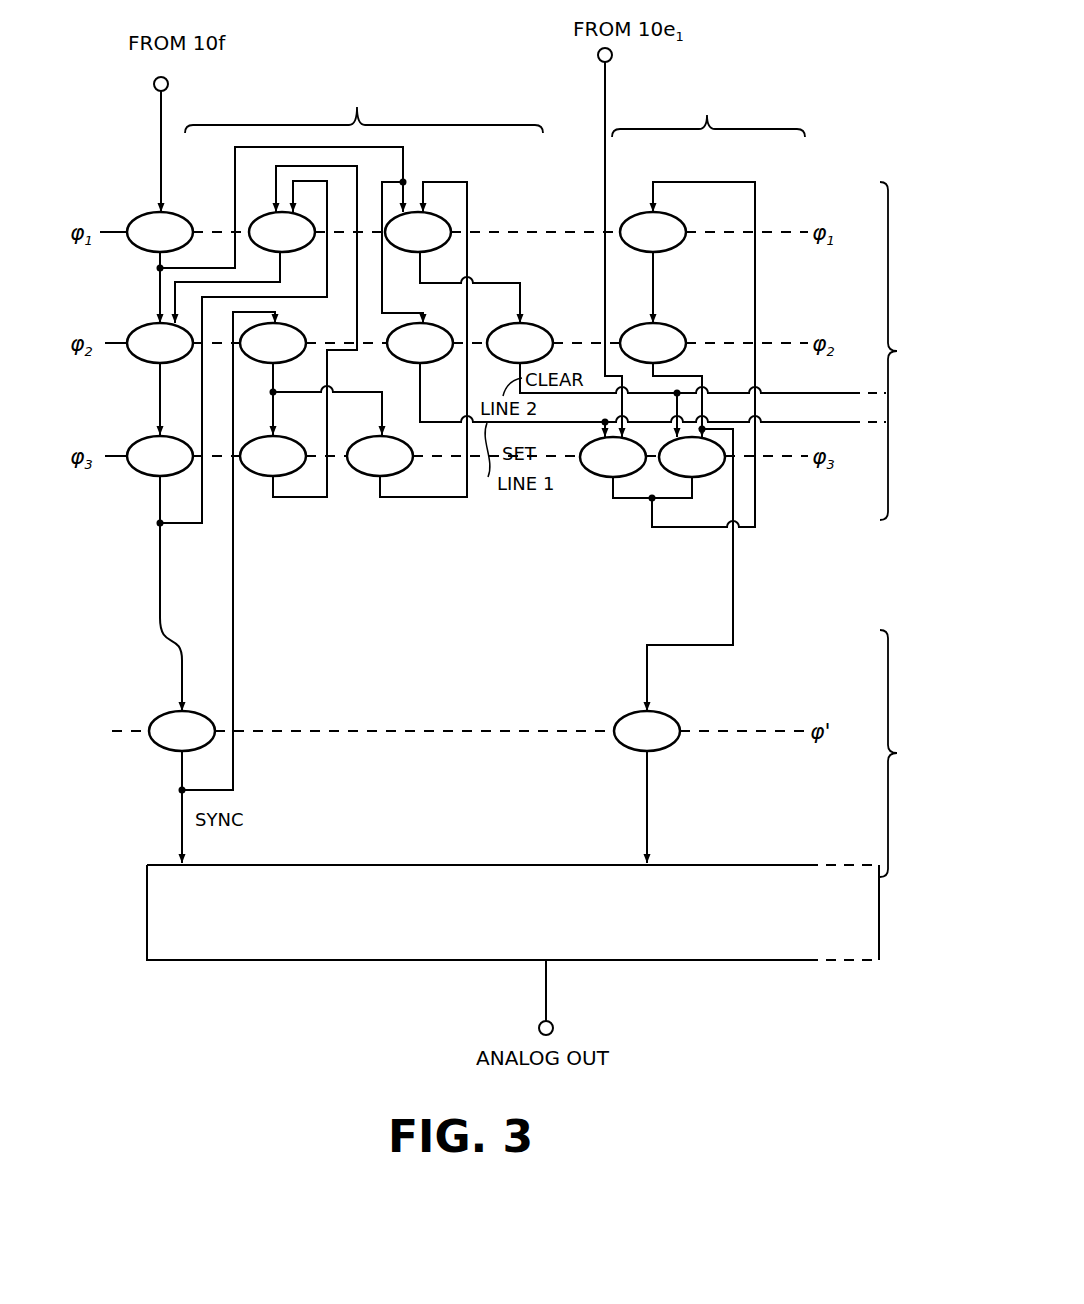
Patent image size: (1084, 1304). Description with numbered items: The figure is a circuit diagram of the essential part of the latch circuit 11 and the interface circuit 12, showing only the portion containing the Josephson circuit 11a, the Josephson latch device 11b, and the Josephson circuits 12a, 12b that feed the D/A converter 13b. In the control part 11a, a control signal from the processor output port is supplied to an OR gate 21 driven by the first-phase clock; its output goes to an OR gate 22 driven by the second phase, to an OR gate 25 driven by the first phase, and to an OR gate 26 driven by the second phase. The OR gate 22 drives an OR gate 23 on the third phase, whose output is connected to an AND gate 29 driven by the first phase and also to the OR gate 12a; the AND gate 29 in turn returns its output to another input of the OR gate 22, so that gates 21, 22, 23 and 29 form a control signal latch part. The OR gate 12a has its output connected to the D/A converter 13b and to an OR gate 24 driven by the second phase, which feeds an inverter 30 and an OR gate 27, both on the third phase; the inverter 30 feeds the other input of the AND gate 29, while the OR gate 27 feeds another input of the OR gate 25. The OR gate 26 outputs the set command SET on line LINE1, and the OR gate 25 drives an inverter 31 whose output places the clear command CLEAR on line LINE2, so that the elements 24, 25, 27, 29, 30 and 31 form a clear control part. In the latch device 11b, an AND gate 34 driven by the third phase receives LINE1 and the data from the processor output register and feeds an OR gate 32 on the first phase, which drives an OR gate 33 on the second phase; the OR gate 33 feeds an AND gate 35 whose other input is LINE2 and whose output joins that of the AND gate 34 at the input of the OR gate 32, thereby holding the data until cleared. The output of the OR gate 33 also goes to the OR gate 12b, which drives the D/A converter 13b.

The Josephson OR gate 21 is at (144, 212).
The Josephson OR gate 22 is at (144, 325).
The Josephson OR gate 23 is at (144, 437).
The Josephson OR gate 24 is at (262, 364).
The Josephson OR gate 25 is at (447, 219).
The Josephson OR gate 26 is at (402, 359).
The Josephson OR gate 27 is at (372, 477).
The Josephson AND gate 29 is at (303, 252).
The Josephson inverter 30 is at (262, 477).
The Josephson inverter 31 is at (545, 329).
The Josephson OR gate 32 is at (680, 218).
The Josephson OR gate 33 is at (678, 329).
The Josephson AND gate 34 is at (595, 476).
The Josephson AND gate 35 is at (683, 478).
The Josephson circuit (OR gate) 12a is at (160, 748).
The Josephson circuit (OR gate) 12b is at (667, 746).
The D/A converter 13b is at (470, 865).
The Josephson circuit (control part of latch circuit) 11a is at (364, 101).
The Josephson latch device 11b is at (708, 103).
The latch circuit 11 is at (911, 351).
The interface circuit 12 is at (908, 753).